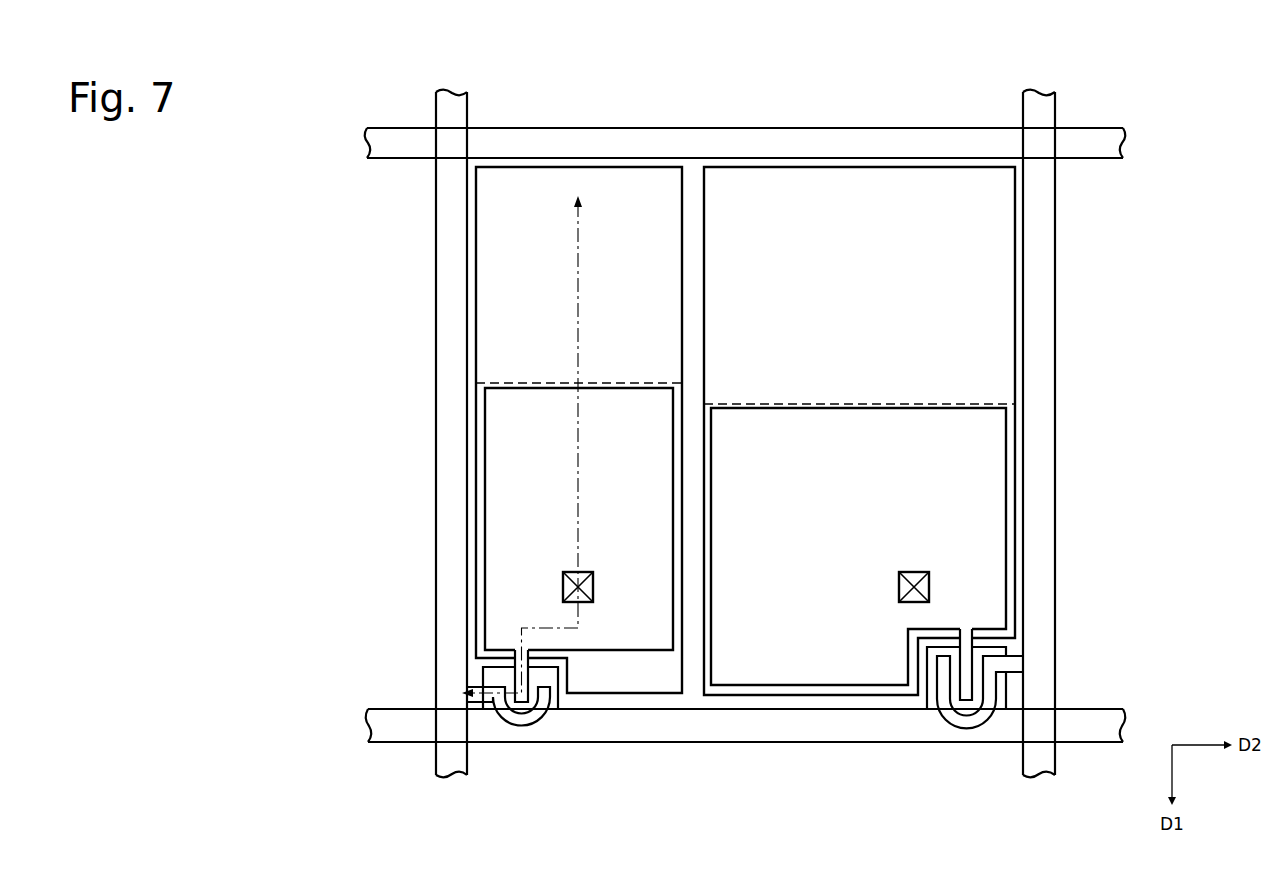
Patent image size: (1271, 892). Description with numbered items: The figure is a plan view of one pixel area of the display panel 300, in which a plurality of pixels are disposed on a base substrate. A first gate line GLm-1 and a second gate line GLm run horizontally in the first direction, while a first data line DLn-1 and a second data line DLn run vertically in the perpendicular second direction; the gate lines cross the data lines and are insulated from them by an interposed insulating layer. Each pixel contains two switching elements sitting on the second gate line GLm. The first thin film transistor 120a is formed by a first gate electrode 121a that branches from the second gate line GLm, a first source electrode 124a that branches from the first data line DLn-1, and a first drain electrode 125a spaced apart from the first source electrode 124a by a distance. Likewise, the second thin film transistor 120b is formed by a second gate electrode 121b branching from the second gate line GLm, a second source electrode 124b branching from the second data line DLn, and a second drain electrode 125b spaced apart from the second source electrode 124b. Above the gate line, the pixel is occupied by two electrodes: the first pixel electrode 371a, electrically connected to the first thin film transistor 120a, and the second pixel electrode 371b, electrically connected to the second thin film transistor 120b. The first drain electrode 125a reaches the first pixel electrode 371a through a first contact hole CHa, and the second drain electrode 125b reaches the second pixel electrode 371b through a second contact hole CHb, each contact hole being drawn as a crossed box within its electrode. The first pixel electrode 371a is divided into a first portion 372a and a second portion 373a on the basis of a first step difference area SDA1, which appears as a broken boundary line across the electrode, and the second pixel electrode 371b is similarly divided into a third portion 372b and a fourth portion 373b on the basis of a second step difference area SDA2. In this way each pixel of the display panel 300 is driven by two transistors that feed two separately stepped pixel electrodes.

The display panel 300 is at (1116, 89).
The first gate line GLm-1 is at (388, 136).
The second gate line GLm is at (391, 722).
The first data line DLn-1 is at (451, 102).
The second data line DLn is at (1038, 102).
The first pixel electrode 371a is at (352, 297).
The second portion 373a is at (502, 305).
The first step difference area SDA1 is at (497, 383).
The first portion 372a is at (482, 440).
The second pixel electrode 371b is at (1134, 295).
The fourth portion 373b is at (990, 305).
The second step difference area SDA2 is at (996, 404).
The third portion 372b is at (1010, 440).
The first contact hole CHa is at (582, 572).
The second contact hole CHb is at (914, 572).
The first thin film transistor 120a is at (600, 826).
The first gate electrode 121a is at (553, 704).
The first source electrode 124a is at (522, 722).
The first drain electrode 125a is at (498, 713).
The second thin film transistor 120b is at (1035, 826).
The second gate electrode 121b is at (1000, 704).
The second source electrode 124b is at (962, 722).
The second drain electrode 125b is at (958, 706).